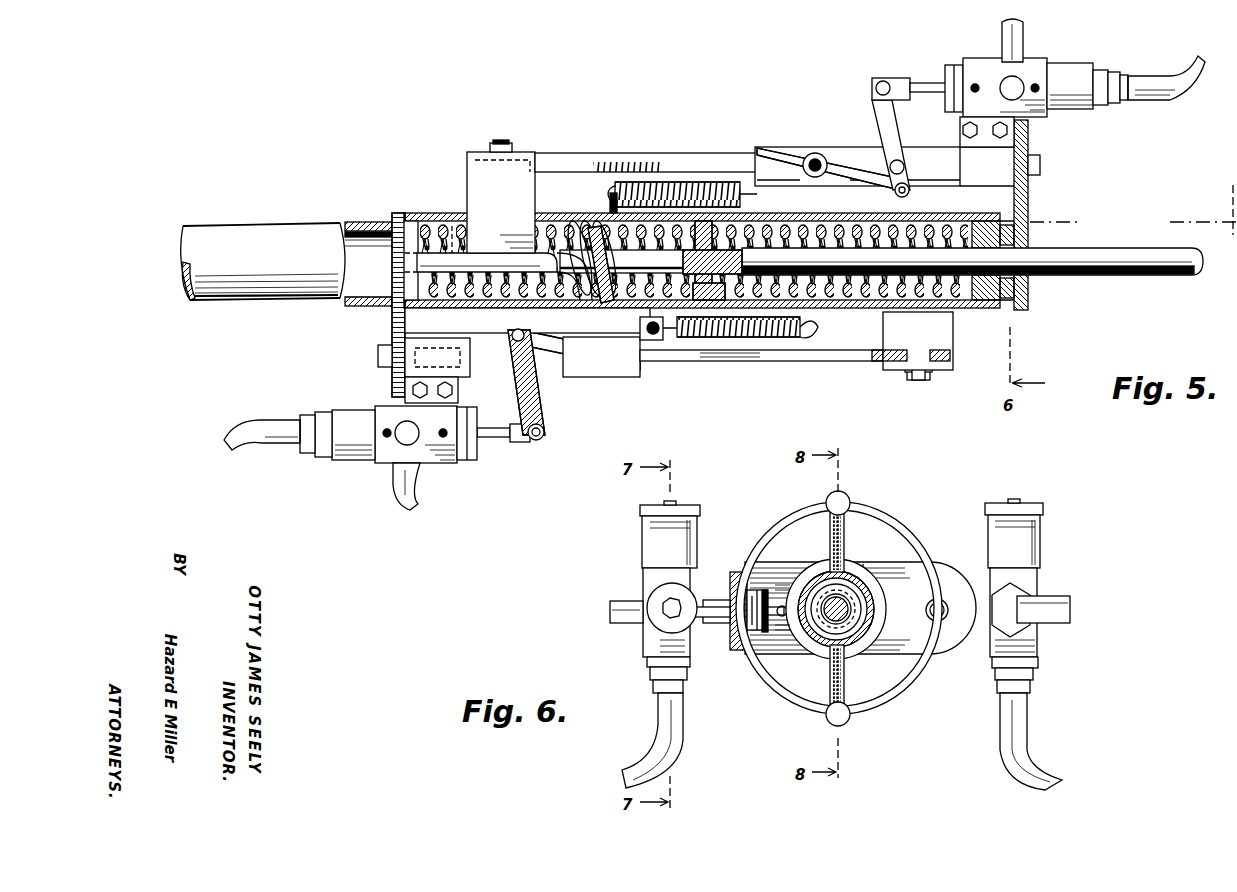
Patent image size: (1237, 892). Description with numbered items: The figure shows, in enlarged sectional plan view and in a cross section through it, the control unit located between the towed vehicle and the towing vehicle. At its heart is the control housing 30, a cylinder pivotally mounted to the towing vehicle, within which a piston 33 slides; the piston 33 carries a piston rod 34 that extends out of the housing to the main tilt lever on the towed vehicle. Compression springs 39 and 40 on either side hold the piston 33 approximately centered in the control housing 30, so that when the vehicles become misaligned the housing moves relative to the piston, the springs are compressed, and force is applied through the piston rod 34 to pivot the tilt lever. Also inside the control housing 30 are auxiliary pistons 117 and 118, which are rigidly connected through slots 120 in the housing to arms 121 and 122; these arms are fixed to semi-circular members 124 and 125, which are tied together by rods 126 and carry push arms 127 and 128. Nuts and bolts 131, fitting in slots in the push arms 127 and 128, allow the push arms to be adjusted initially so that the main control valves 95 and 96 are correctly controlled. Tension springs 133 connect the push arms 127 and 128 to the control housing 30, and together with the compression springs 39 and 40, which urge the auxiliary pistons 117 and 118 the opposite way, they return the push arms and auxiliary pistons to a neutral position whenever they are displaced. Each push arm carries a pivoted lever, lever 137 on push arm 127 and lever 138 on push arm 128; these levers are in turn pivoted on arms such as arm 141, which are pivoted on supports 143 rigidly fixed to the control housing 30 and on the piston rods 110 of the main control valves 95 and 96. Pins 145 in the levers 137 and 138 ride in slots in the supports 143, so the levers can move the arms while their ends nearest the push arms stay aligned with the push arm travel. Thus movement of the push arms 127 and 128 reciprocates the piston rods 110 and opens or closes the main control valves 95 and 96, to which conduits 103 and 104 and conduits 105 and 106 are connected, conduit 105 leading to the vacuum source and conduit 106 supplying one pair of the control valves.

In FIG. 5, the control housing 30 is at (578, 214).
In FIG. 6, the control housing 30 is at (820, 655).
In FIG. 5, the piston 33 is at (742, 258).
In FIG. 5, the piston rod 34 is at (1140, 278).
In FIG. 6, the piston rod 34 is at (851, 617).
In FIG. 5, the compression spring 39 is at (598, 303).
In FIG. 5, the compression spring 40 is at (650, 312).
In FIG. 5, the main control valve 95 is at (1077, 117).
In FIG. 6, the main control valve 95 is at (1045, 580).
In FIG. 5, the main control valve 96 is at (358, 460).
In FIG. 6, the main control valve 96 is at (652, 580).
In FIG. 5, the conduit 103 is at (1150, 102).
In FIG. 6, the conduit 103 is at (1062, 622).
In FIG. 5, the conduit 104 is at (1027, 45).
In FIG. 6, the conduit 104 is at (1035, 726).
In FIG. 5, the conduit 105 is at (276, 420).
In FIG. 6, the conduit 105 is at (616, 622).
In FIG. 5, the conduit 106 is at (421, 490).
In FIG. 6, the conduit 106 is at (687, 745).
In FIG. 5, the piston rod 110 is at (912, 84).
In FIG. 6, the piston rod 110 is at (737, 611).
In FIG. 5, the auxiliary piston 117 is at (990, 288).
In FIG. 6, the auxiliary piston 117 is at (817, 583).
In FIG. 5, the auxiliary piston 118 is at (437, 308).
In FIG. 5, the slot 120 is at (452, 252).
In FIG. 6, the slot 120 is at (905, 570).
In FIG. 6, the arm 121 is at (832, 514).
In FIG. 5, the arm 122 is at (398, 262).
In FIG. 6, the semi-circular member 124 is at (787, 522).
In FIG. 5, the semi-circular member 125 is at (480, 183).
In FIG. 6, the semi-circular member 125 is at (920, 538).
In FIG. 5, the rod 126 is at (545, 253).
In FIG. 6, the rod 126 is at (850, 503).
In FIG. 5, the push arm 127 is at (745, 362).
In FIG. 6, the push arm 127 is at (740, 645).
In FIG. 5, the push arm 128 is at (563, 153).
In FIG. 5, the nuts and bolts 131 is at (518, 125).
In FIG. 6, the nuts and bolts 131 is at (732, 592).
In FIG. 5, the tension spring 133 is at (690, 182).
In FIG. 5, the lever 137 is at (576, 375).
In FIG. 5, the lever 138 is at (893, 193).
In FIG. 5, the arm 141 is at (875, 104).
In FIG. 5, the support 143 is at (853, 153).
In FIG. 6, the support 143 is at (762, 592).
In FIG. 5, the pin 145 is at (810, 157).